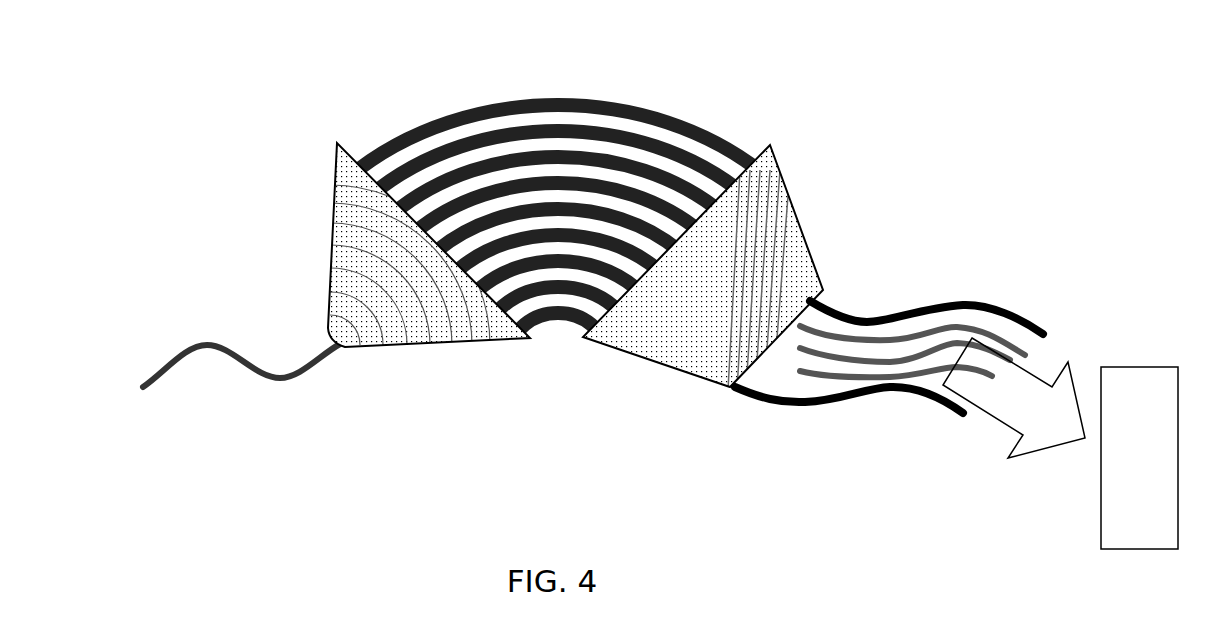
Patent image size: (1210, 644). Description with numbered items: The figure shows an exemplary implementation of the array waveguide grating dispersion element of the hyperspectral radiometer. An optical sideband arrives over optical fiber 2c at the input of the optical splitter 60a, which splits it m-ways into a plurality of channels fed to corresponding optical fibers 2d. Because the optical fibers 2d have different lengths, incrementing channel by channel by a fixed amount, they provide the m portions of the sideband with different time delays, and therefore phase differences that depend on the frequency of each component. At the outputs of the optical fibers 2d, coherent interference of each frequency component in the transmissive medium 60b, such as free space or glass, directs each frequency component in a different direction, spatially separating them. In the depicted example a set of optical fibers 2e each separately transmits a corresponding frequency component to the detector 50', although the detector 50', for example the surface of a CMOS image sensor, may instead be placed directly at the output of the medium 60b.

The optical fiber 2c is at (241, 345).
The optical fibers 2d is at (558, 228).
The optical splitter 60a is at (429, 245).
The transmissive medium 60b is at (703, 267).
The set of optical fibers 2e is at (889, 339).
The detector 50' is at (1139, 458).